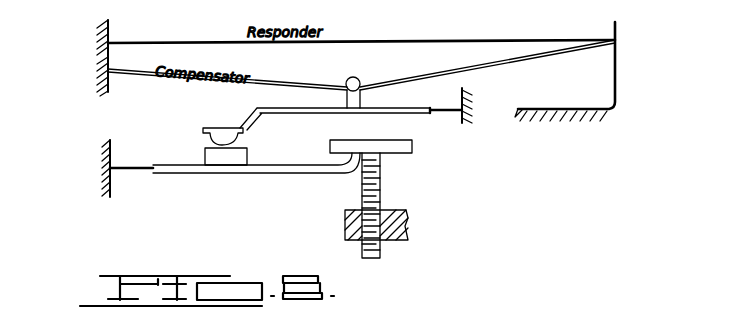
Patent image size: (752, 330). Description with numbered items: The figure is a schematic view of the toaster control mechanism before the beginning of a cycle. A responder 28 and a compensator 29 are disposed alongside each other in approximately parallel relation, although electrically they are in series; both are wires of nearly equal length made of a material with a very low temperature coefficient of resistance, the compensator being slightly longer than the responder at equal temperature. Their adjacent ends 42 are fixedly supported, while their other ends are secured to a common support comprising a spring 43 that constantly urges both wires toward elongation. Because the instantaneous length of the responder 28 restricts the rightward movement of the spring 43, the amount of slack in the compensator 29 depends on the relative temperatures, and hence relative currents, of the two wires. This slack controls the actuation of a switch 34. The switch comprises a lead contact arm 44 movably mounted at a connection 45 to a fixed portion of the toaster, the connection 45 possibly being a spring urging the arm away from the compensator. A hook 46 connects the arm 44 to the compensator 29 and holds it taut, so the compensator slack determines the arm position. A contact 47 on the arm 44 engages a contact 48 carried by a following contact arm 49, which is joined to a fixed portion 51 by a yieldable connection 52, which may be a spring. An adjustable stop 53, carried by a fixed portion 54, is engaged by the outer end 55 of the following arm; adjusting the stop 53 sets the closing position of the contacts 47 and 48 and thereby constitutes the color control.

The responder 28 is at (451, 39).
The compensator 29 is at (185, 80).
The switch 34 is at (200, 138).
The adjacent ends 42 is at (97, 80).
The spring 43 is at (618, 58).
The contact arm 44 is at (272, 108).
The connection 45 is at (440, 106).
The hook 46 is at (360, 78).
The contact 47 is at (238, 140).
The contact 48 is at (233, 157).
The contact arm 49 is at (223, 175).
The fixed portion 51 is at (102, 170).
The yieldable connection 52 is at (134, 166).
The adjustable stop 53 is at (392, 152).
The fixed portion 54 is at (345, 232).
The outer end 55 is at (350, 168).